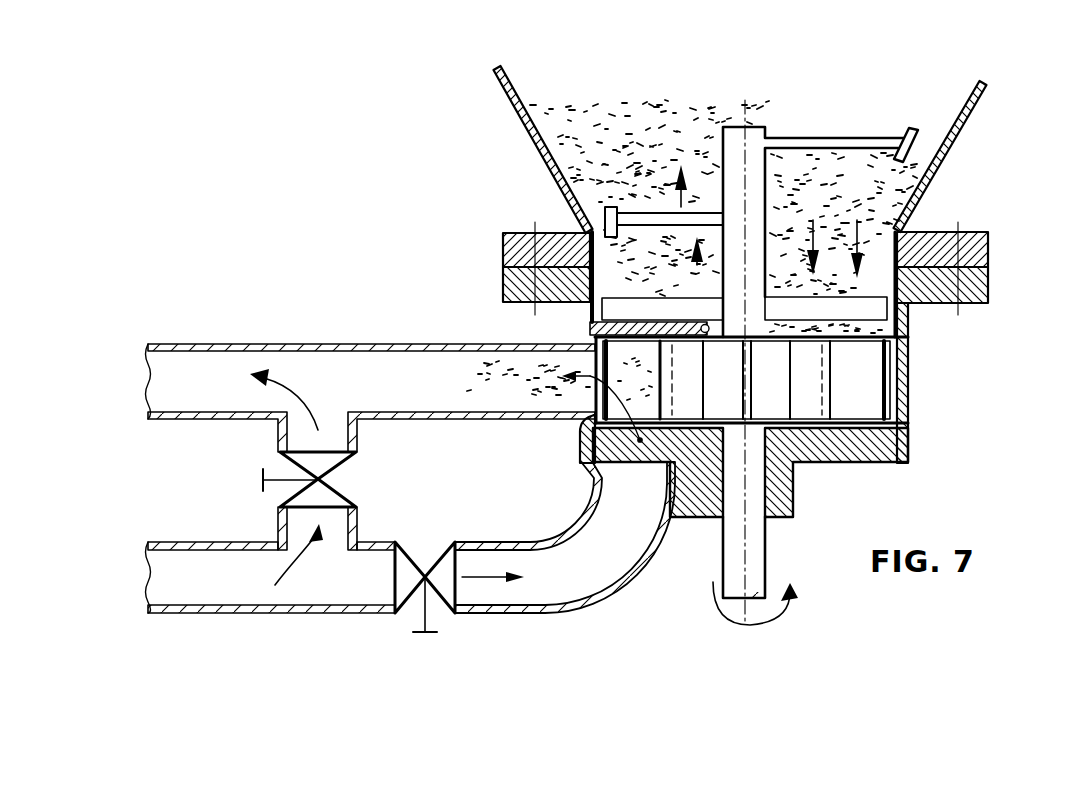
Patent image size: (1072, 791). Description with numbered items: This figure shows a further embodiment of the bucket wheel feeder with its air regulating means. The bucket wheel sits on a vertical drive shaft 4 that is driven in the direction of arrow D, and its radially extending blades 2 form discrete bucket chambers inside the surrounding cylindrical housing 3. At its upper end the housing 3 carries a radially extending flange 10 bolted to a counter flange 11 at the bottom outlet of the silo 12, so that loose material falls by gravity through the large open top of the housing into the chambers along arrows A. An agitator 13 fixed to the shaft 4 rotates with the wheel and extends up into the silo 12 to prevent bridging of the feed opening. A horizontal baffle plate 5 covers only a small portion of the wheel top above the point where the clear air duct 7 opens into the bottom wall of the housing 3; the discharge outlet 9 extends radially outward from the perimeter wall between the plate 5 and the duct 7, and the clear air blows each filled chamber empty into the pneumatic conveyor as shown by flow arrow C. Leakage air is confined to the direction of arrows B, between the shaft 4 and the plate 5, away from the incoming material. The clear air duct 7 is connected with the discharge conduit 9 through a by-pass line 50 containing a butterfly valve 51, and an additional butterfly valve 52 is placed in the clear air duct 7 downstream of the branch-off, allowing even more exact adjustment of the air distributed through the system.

The blades 2 is at (870, 375).
The cylindrical housing 3 is at (906, 412).
The vertical drive shaft 4 is at (746, 562).
The plate 5 is at (590, 323).
The clear air duct 7 is at (506, 613).
The discharge outlet 9 is at (355, 344).
The flange 10 is at (979, 283).
The counter flange 11 is at (969, 242).
The silo 12 is at (969, 114).
The agitator 13 is at (805, 148).
The by-pass line 50 is at (358, 506).
The butterfly valve 51 is at (277, 476).
The additional butterfly valve 52 is at (430, 618).
The arrows A is at (813, 222).
The arrows B is at (697, 265).
The flow arrow C is at (640, 440).
The arrow D is at (764, 618).